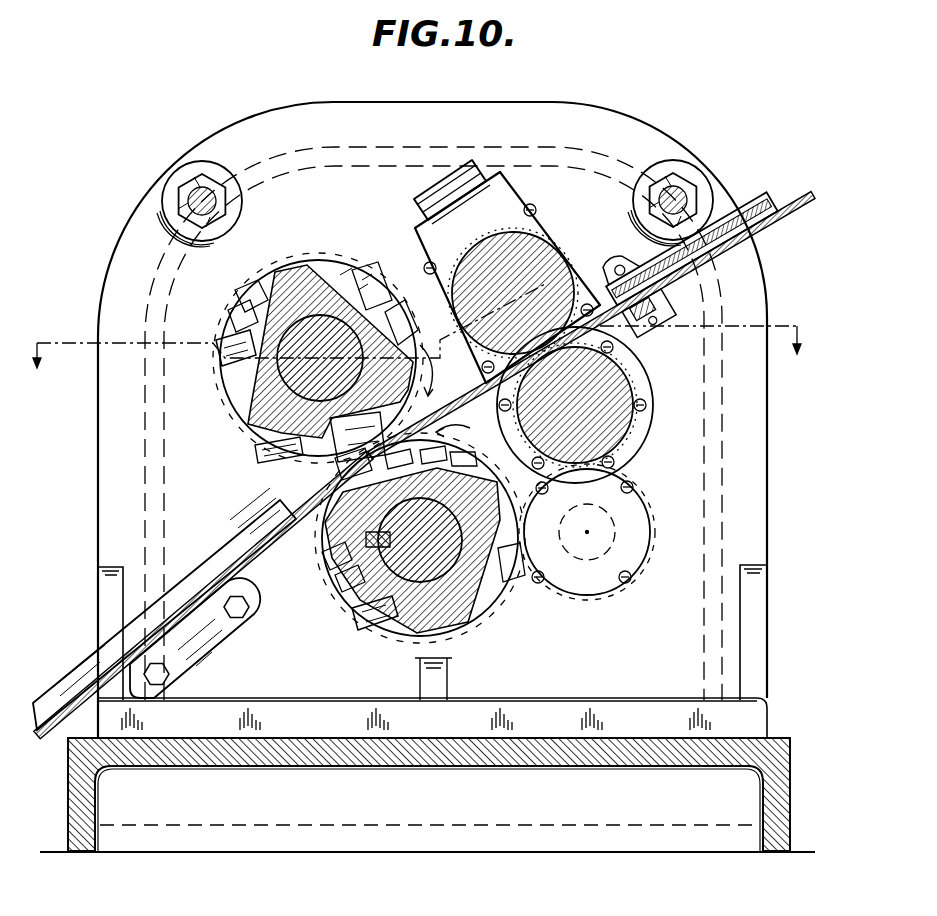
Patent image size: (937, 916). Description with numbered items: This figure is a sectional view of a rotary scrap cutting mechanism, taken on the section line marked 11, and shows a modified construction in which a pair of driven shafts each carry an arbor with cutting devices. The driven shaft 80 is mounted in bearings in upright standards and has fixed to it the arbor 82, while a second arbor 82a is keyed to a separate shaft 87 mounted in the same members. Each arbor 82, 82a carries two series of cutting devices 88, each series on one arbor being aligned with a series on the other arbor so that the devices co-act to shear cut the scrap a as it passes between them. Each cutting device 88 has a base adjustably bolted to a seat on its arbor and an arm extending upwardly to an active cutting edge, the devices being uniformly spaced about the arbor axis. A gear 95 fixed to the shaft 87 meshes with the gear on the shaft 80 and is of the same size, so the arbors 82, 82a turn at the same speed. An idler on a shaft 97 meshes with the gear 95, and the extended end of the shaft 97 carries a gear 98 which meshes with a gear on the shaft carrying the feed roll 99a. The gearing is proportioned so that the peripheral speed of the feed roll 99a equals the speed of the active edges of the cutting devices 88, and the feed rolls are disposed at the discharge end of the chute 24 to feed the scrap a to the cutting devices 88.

The driven shaft 80 is at (262, 385).
The arbor 82 is at (262, 429).
The arbor 82a is at (422, 612).
The shaft 87 is at (366, 538).
The cutting devices 88 is at (220, 352).
The gear 95 is at (333, 575).
The shaft 97 is at (586, 536).
The gear 98 is at (645, 552).
The feed roll 99a is at (628, 384).
The chute 24 is at (696, 255).
The scrap a is at (800, 197).
The section line 11- 11 is at (419, 339).